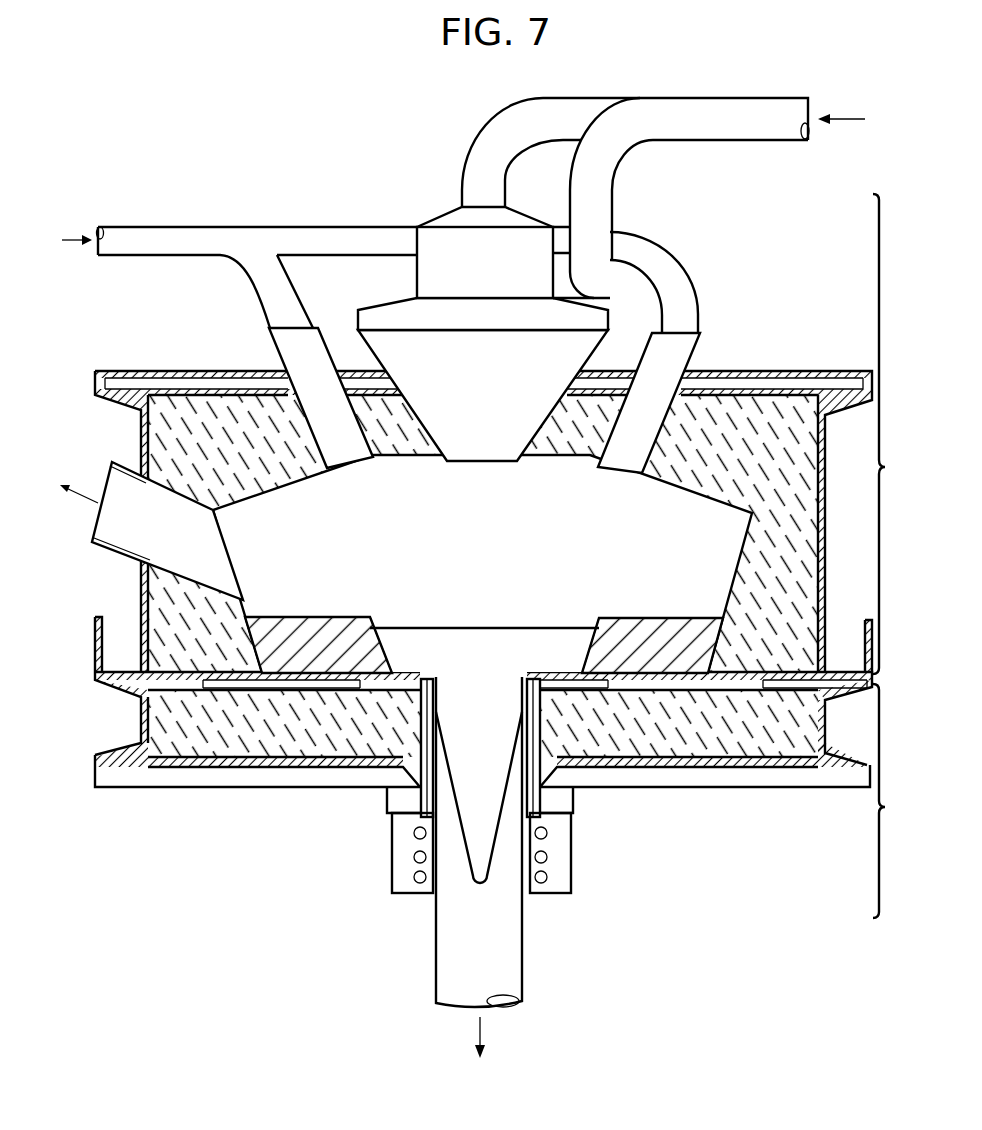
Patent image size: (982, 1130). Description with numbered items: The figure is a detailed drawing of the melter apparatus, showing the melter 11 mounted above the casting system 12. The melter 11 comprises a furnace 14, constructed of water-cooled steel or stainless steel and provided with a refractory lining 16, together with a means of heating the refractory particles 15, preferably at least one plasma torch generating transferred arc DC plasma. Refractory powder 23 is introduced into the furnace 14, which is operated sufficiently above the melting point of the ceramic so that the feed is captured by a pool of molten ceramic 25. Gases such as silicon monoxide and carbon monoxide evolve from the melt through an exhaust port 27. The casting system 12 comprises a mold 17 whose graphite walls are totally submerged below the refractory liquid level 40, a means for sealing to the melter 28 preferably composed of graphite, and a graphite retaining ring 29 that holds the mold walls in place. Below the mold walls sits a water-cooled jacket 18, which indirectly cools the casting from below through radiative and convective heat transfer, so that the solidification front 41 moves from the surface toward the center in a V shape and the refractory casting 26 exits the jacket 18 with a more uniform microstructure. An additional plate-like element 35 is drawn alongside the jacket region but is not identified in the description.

The melter 11 is at (865, 434).
The casting system 12 is at (865, 801).
The furnace 14 is at (831, 540).
The means of heating the refractory particles 15 is at (453, 245).
The refractory lining 16 is at (800, 595).
The mold 17 is at (377, 768).
The water-cooled jacket 18 is at (400, 877).
The refractory powder 23 is at (158, 225).
The pool of molten ceramic 25 is at (437, 643).
The refractory casting 26 is at (524, 960).
The exhaust port 27 is at (112, 487).
The means for sealing to the melter 28 is at (313, 670).
The graphite retaining ring 29 is at (599, 679).
The retaining plate 35 is at (423, 792).
The refractory liquid level 40 is at (538, 628).
The solidification front 41 is at (462, 817).